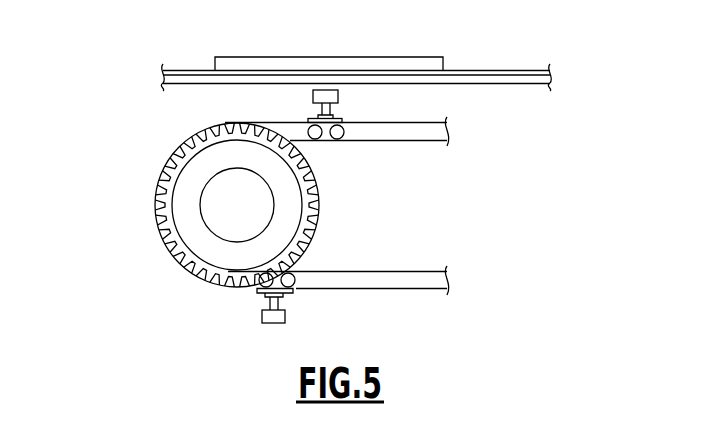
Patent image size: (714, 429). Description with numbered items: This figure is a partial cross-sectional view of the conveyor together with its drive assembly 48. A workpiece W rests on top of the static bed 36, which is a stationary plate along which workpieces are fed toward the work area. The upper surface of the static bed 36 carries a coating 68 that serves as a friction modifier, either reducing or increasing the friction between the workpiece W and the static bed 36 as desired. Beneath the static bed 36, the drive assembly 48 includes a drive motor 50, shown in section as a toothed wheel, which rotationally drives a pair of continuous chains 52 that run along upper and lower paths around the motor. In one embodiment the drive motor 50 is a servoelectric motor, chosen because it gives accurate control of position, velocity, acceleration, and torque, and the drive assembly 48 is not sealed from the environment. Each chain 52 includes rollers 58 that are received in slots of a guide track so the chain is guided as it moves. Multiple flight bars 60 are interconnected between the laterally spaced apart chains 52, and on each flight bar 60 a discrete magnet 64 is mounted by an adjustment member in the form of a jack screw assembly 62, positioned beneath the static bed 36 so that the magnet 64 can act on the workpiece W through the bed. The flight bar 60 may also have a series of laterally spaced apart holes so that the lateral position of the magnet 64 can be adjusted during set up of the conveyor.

The static bed 36 is at (537, 80).
The drive assembly 48 is at (157, 283).
The drive motor 50 is at (213, 207).
The continuous chain 52 is at (410, 133).
The rollers 58 is at (317, 140).
The flight bar 60 is at (315, 119).
The jack screw assembly 62 is at (350, 113).
The magnet 64 is at (325, 96).
The coating 68 is at (487, 71).
The workpiece W is at (311, 62).